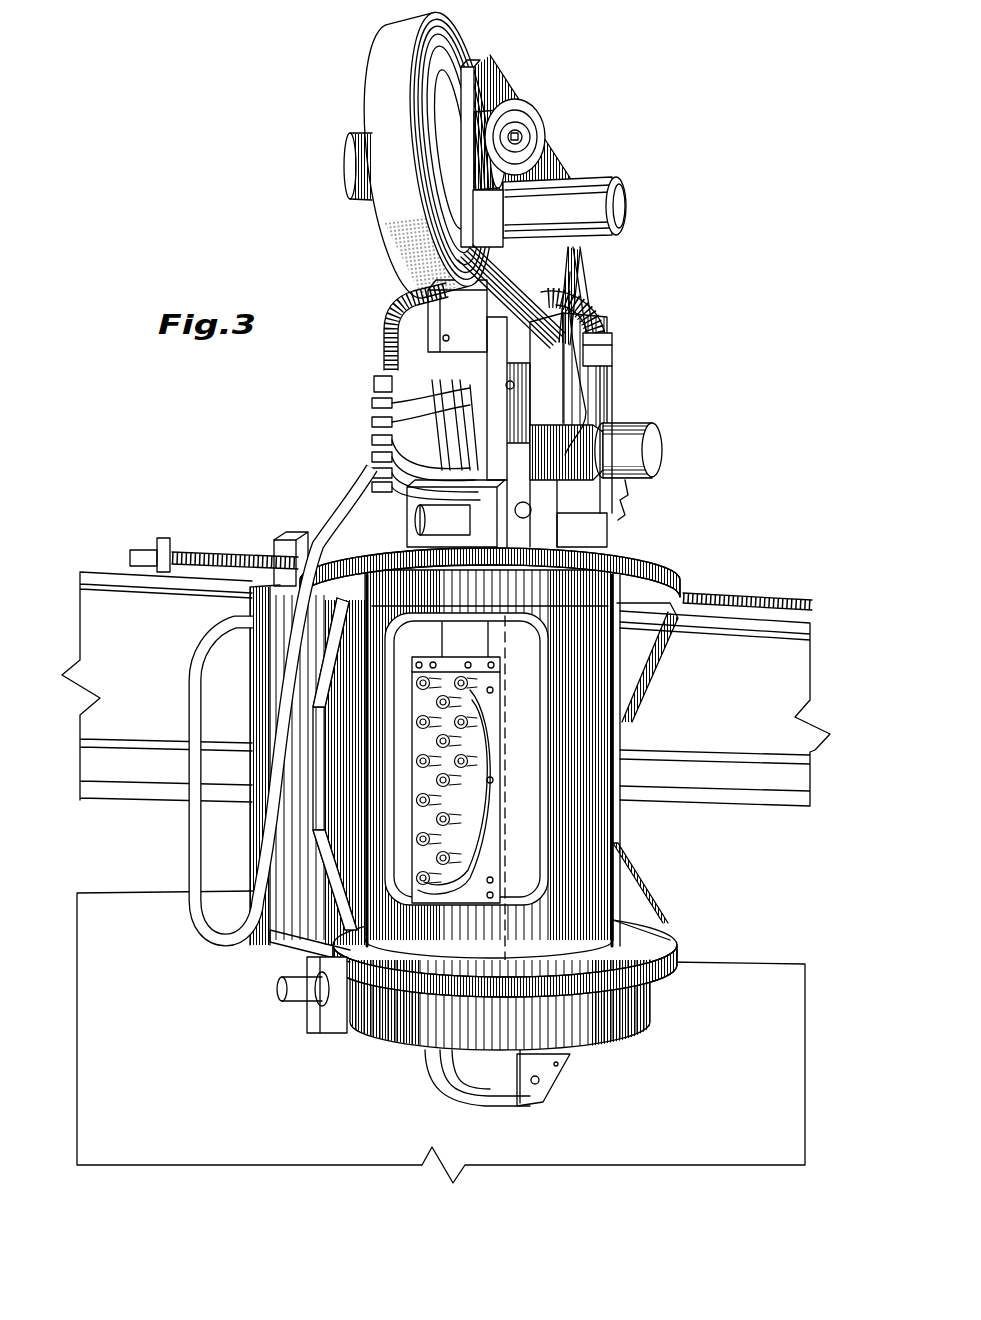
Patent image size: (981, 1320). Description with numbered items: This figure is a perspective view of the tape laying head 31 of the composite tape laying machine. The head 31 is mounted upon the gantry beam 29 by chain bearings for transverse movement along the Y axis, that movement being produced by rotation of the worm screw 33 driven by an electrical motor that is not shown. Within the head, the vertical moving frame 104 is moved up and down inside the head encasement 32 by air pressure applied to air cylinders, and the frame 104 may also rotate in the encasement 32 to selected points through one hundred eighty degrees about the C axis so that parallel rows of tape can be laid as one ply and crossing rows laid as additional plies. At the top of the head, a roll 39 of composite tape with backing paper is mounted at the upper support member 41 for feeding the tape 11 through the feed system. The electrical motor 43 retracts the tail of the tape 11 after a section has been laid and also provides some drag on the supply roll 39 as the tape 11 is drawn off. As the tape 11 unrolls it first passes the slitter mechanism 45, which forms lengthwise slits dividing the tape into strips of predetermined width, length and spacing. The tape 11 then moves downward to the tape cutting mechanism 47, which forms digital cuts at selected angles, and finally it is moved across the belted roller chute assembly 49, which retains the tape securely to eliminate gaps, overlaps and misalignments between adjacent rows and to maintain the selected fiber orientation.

The tape 11 is at (467, 312).
The gantry 29 is at (698, 689).
The tape laying head 31 is at (672, 436).
The head encasement 32 is at (655, 570).
The worm screw 33 is at (715, 592).
The roll of composite tape 39 is at (393, 31).
The upper support member 41 is at (540, 148).
The electrical motor 43 is at (628, 208).
The slitter mechanism 45 is at (380, 393).
The tape cutting mechanism 47 is at (538, 718).
The belted roller chute assembly 49 is at (541, 1104).
The vertical moving frame 104 is at (572, 382).